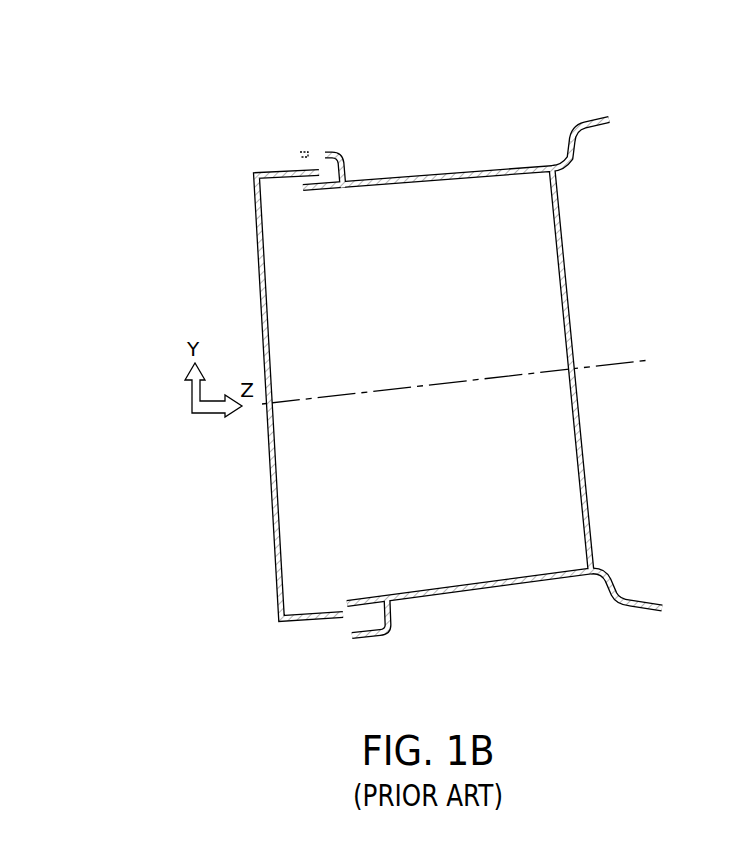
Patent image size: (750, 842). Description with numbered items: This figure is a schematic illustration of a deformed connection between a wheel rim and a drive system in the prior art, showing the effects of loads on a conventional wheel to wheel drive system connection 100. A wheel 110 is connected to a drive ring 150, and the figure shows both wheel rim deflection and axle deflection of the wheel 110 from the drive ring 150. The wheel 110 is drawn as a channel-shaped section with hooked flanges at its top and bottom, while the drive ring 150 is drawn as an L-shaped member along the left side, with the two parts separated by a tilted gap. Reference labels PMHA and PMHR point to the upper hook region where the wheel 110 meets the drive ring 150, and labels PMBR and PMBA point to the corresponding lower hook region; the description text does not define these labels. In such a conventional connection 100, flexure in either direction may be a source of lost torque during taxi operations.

The wheel to wheel drive system connection 100 is at (457, 394).
The wheel 110 is at (481, 355).
The drive ring 150 is at (273, 530).
The panel member head attachment point PMHA is at (328, 118).
The panel member head reference point PMHR is at (337, 235).
The panel member bottom reference point PMBR is at (378, 552).
The panel member bottom attachment point PMBA is at (318, 668).